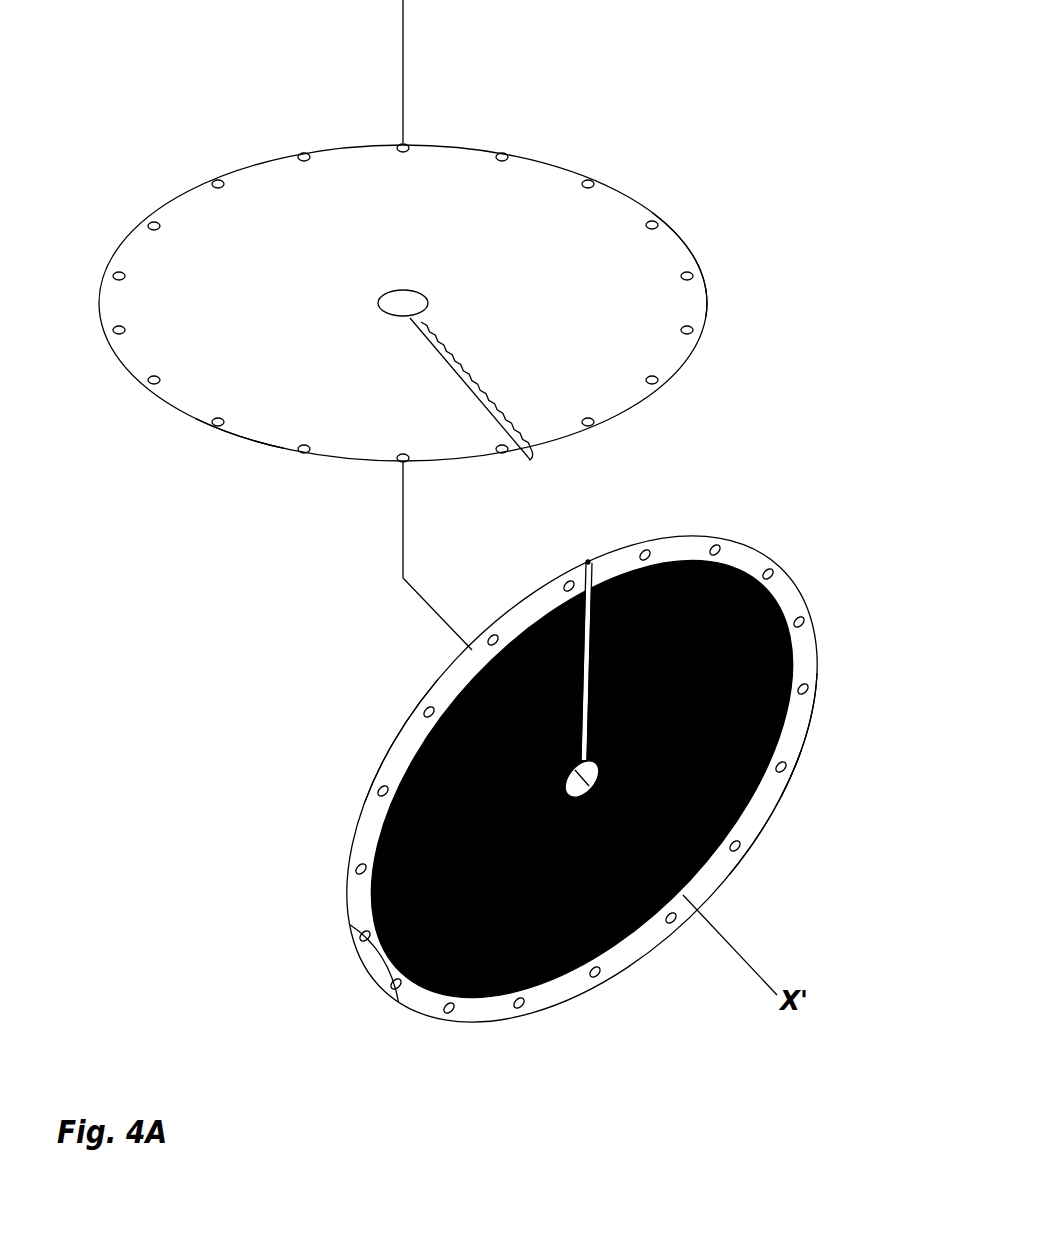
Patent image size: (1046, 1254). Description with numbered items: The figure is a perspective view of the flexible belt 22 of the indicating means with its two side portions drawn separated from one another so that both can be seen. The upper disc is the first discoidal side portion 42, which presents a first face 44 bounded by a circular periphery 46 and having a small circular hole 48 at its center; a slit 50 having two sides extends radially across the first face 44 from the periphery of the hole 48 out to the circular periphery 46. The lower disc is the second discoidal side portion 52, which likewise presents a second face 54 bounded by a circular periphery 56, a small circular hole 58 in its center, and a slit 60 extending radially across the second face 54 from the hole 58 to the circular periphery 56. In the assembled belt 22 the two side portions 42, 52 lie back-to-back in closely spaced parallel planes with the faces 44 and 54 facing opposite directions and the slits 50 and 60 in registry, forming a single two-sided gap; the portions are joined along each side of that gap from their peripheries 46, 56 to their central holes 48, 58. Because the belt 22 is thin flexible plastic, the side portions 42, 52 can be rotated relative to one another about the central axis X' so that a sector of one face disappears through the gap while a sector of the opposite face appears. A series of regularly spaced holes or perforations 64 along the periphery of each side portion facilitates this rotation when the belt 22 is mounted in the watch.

The flexible belt 22 is at (235, 436).
The first discoidal side portion 42 is at (668, 245).
The first face 44 is at (603, 203).
The circular periphery 46 is at (707, 290).
The small circular hole 48 is at (417, 290).
The slit 50 is at (518, 425).
The second discoidal side portion 52 is at (805, 645).
The second face 54 is at (800, 731).
The circular periphery 56 is at (768, 810).
The small circular hole 58 is at (385, 957).
The slit 60 is at (612, 558).
The holes or perforations 64 is at (302, 152).